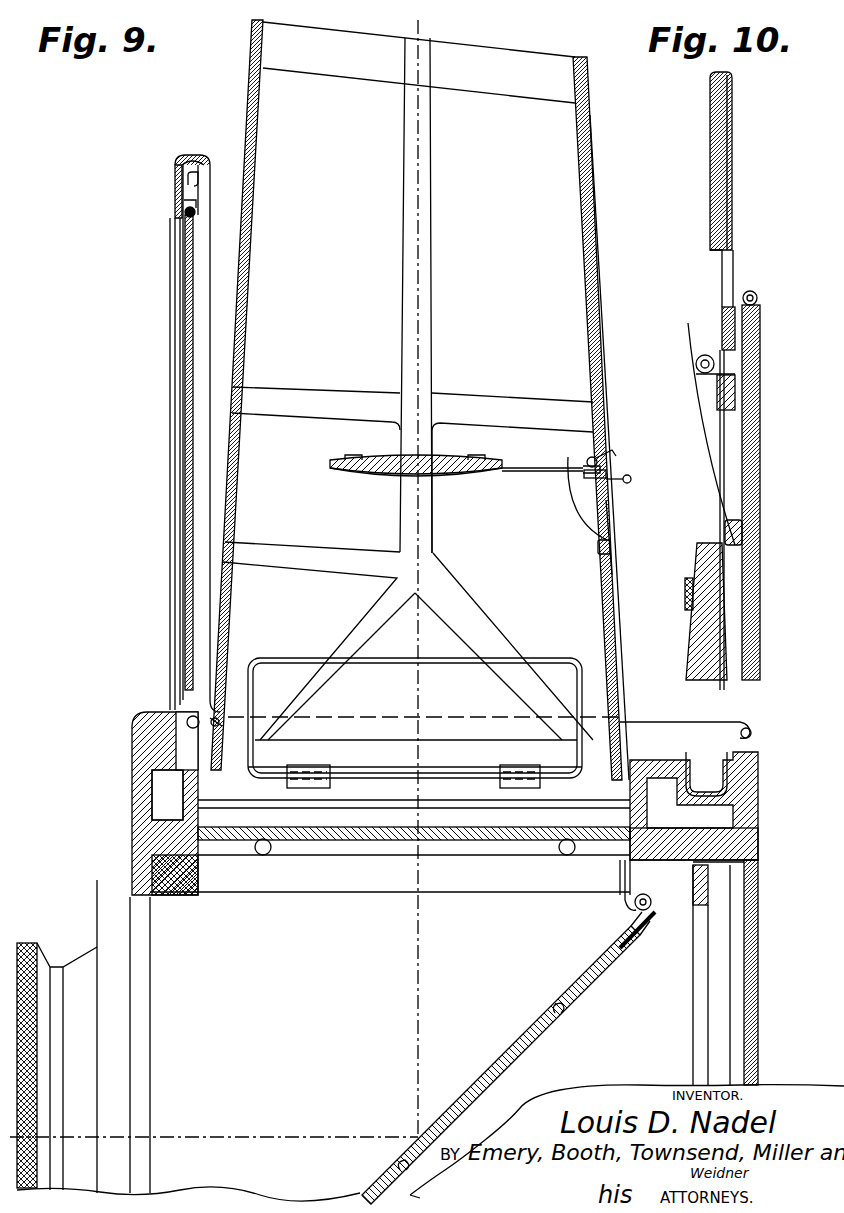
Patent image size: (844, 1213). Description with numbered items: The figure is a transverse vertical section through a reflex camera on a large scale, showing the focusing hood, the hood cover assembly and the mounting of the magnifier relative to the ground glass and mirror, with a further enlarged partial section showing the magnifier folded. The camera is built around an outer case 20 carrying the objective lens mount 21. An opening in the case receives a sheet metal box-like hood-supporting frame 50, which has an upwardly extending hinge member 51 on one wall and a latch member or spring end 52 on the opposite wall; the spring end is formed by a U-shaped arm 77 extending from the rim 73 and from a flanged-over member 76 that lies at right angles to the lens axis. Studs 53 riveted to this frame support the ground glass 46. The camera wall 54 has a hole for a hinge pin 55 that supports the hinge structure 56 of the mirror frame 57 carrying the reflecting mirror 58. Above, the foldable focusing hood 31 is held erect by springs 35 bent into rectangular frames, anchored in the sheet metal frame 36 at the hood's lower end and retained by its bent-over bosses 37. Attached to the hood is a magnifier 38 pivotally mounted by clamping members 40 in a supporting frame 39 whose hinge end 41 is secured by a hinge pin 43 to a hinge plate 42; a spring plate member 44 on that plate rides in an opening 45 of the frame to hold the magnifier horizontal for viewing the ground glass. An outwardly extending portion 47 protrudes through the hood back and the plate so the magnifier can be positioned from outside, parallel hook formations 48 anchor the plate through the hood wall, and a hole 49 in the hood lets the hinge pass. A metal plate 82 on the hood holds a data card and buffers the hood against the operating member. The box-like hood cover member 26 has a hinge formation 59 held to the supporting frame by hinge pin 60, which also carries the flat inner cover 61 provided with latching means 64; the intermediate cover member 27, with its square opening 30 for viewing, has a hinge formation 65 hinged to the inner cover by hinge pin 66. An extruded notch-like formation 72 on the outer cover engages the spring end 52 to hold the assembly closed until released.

In FIG. 9, the outer case 20 is at (132, 813).
In FIG. 9, the objective lens mount 21 is at (32, 943).
In FIG. 9, the hood cover member 26 is at (175, 183).
In FIG. 9, the intermediate cover member 27 is at (176, 289).
In FIG. 9, the square opening 30 is at (176, 508).
In FIG. 9, the focusing hood 31 is at (265, 97).
In FIG. 10, the focusing hood 31 is at (726, 165).
In FIG. 9, the springs 35 is at (383, 665).
In FIG. 9, the frame 36 is at (222, 801).
In FIG. 9, the bent-over bosses 37 is at (312, 765).
In FIG. 9, the magnifier 38 is at (456, 470).
In FIG. 10, the magnifier 38 is at (690, 650).
In FIG. 9, the magnifier supporting frame 39 is at (524, 472).
In FIG. 10, the magnifier supporting frame 39 is at (720, 503).
In FIG. 9, the clamping members 40 is at (353, 455).
In FIG. 10, the clamping members 40 is at (685, 601).
In FIG. 9, the hinge end 41 is at (604, 457).
In FIG. 10, the hinge end 41 is at (712, 347).
In FIG. 9, the hinge plate 42 is at (616, 577).
In FIG. 10, the hinge plate 42 is at (760, 578).
In FIG. 9, the hinge pin 43 is at (588, 461).
In FIG. 10, the hinge pin 43 is at (696, 366).
In FIG. 9, the spring plate member 44 is at (585, 500).
In FIG. 10, the spring plate member 44 is at (696, 397).
In FIG. 9, the opening 45 is at (545, 467).
In FIG. 9, the ground glass 46 is at (374, 841).
In FIG. 9, the outwardly extending portion 47 is at (631, 480).
In FIG. 10, the outwardly extending portion 47 is at (758, 298).
In FIG. 9, the hook formations 48 is at (597, 548).
In FIG. 10, the hook formations 48 is at (725, 533).
In FIG. 9, the hole 49 is at (606, 473).
In FIG. 10, the hole 49 is at (736, 388).
In FIG. 9, the hood-supporting frame 50 is at (490, 893).
In FIG. 9, the hinge member 51 is at (218, 718).
In FIG. 9, the latch member or spring end 52 is at (753, 734).
In FIG. 9, the studs 53 is at (260, 856).
In FIG. 9, the camera wall 54 is at (690, 1022).
In FIG. 9, the hinge pin 55 is at (651, 904).
In FIG. 9, the hinge structure 56 is at (640, 900).
In FIG. 9, the mirror frame 57 is at (594, 975).
In FIG. 9, the reflecting mirror 58 is at (494, 1048).
In FIG. 9, the hinge formation 59 is at (172, 768).
In FIG. 9, the hinge pin 60 is at (186, 718).
In FIG. 9, the inner cover 61 is at (196, 247).
In FIG. 9, the latching means 64 is at (200, 178).
In FIG. 9, the hinge formation 65 is at (200, 204).
In FIG. 9, the hinge pin 66 is at (196, 213).
In FIG. 9, the extruded notch-like formation 72 is at (193, 153).
In FIG. 9, the rim 73 is at (700, 765).
In FIG. 9, the flanged-over member 76 is at (658, 760).
In FIG. 9, the U-shaped arm 77 is at (725, 772).
In FIG. 10, the metal plate 82 is at (728, 118).